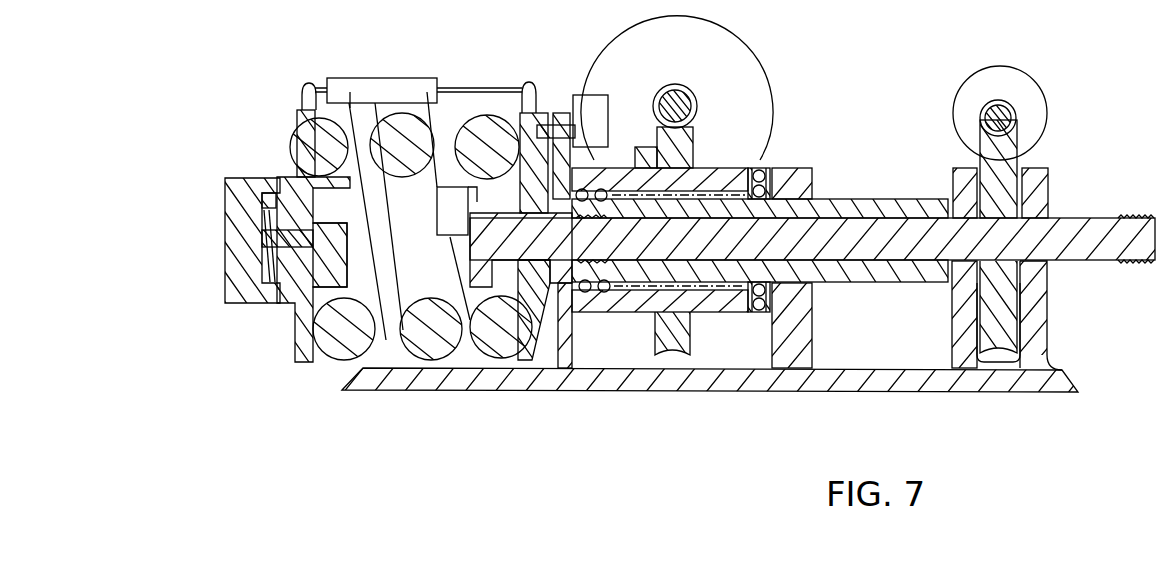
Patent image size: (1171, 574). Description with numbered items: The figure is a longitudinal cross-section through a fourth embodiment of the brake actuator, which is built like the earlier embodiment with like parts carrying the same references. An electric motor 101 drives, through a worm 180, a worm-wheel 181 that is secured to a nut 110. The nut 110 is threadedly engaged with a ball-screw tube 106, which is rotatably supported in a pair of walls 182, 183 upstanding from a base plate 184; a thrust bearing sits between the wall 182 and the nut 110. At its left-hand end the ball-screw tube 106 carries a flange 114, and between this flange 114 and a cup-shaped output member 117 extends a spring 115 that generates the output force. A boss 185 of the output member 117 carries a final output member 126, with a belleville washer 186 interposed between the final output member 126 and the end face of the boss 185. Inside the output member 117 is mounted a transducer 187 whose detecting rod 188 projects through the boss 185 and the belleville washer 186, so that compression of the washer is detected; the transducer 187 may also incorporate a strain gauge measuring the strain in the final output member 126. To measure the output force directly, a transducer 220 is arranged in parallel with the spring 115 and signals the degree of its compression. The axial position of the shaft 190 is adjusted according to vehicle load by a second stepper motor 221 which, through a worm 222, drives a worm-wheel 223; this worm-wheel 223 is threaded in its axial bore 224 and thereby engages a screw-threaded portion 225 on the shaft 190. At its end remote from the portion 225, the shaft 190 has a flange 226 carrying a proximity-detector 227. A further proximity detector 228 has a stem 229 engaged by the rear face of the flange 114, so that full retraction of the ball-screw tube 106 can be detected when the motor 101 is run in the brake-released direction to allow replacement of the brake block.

The electric motor 101 is at (680, 54).
The ball-screw tube 106 is at (650, 320).
The nut 110 is at (720, 315).
The flange 114 is at (536, 112).
The spring 115 is at (413, 133).
The cup-shaped output member 117 is at (300, 338).
The final output member 126 is at (243, 228).
The worm 180 is at (689, 99).
The worm-wheel 181 is at (700, 146).
The wall 182 is at (793, 322).
The wall 183 is at (562, 342).
The base plate 184 is at (768, 167).
The boss 185 is at (297, 262).
The belleville washer 186 is at (262, 205).
The transducer 187 is at (330, 237).
The detecting rod 188 is at (275, 256).
The shaft 190 is at (846, 236).
The transducer 220 is at (372, 90).
The second stepper motor 221 is at (995, 83).
The worm 222 is at (1012, 112).
The worm-wheel 223 is at (990, 200).
The axial bore 224 is at (950, 286).
The screw-threaded portion 225 is at (1064, 262).
The flange 226 is at (465, 292).
The proximity-detector 227 is at (453, 213).
The proximity detector 228 is at (603, 100).
The stem 229 is at (540, 133).